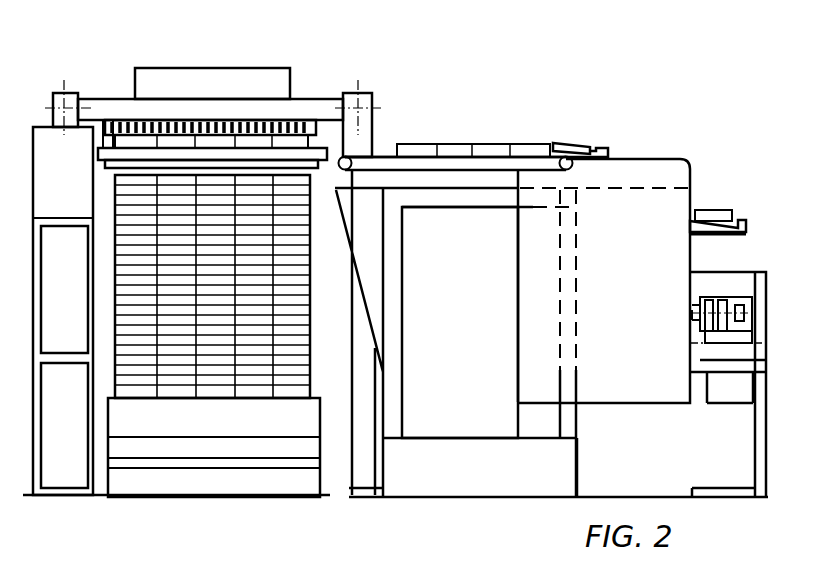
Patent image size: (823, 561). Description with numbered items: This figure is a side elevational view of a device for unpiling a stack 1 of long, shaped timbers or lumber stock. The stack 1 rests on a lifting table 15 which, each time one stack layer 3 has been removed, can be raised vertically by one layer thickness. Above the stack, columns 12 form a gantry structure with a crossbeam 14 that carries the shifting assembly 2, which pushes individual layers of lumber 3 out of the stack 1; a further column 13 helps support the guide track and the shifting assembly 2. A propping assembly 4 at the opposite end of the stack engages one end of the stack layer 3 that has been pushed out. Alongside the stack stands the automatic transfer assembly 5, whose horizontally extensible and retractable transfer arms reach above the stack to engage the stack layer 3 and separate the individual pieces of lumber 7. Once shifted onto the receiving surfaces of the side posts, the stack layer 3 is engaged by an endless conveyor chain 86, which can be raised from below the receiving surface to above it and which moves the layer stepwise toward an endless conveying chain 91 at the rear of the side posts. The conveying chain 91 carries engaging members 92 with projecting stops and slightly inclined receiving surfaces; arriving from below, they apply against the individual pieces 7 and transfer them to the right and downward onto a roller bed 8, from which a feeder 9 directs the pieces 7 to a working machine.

The stack 1 is at (222, 311).
The shifting assembly 2 is at (202, 72).
The stack layer 3 is at (450, 150).
The propping assembly 4 is at (103, 153).
The automatic transfer assembly 5 is at (470, 331).
The individual pieces of lumber 7 is at (577, 147).
The roller bed 8 is at (767, 349).
The feeder 9 is at (768, 285).
The columns 12 is at (53, 118).
The column 13 is at (80, 326).
The crossbeam 14 is at (123, 106).
The lifting table 15 is at (263, 462).
The endless conveyor chain 86 is at (496, 155).
The endless conveying chain 91 is at (670, 205).
The engaging members 92 is at (746, 228).